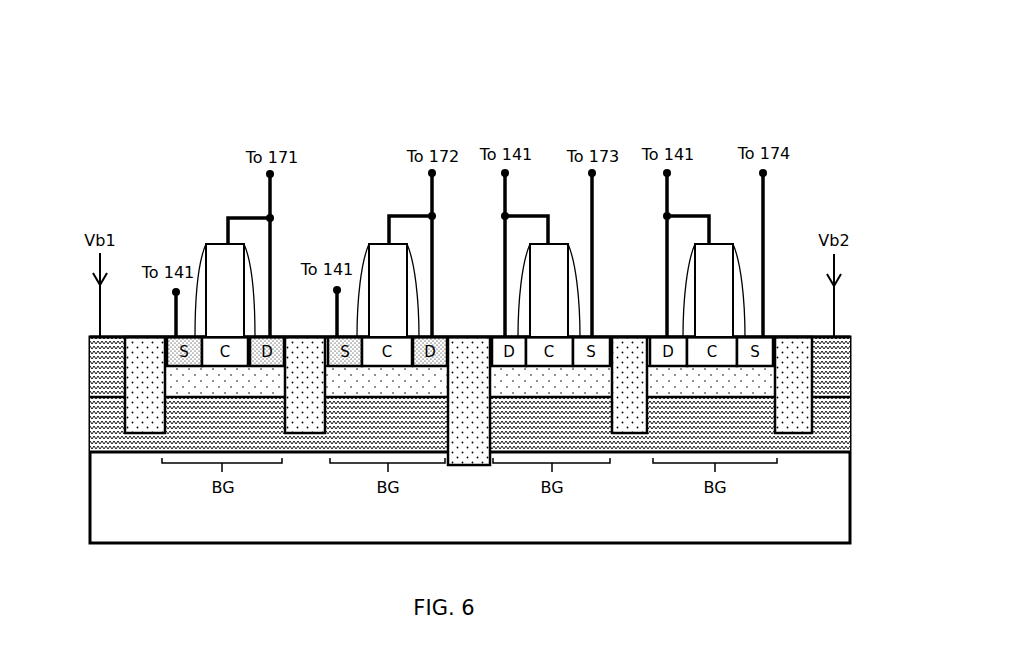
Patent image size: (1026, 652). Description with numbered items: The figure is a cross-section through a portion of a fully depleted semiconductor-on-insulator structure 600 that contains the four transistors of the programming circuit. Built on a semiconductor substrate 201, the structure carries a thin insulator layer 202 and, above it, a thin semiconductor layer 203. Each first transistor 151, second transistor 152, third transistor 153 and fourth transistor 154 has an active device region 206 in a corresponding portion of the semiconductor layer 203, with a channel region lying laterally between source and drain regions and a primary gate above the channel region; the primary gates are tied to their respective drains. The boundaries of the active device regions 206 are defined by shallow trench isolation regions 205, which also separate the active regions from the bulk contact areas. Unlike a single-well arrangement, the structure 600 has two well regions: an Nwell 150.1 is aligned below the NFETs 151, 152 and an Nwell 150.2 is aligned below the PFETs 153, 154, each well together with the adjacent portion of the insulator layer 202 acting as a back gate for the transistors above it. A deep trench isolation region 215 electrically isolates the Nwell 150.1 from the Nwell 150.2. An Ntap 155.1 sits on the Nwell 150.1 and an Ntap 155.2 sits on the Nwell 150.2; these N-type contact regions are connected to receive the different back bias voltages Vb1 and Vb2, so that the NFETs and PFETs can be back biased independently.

The fully depleted semiconductor-on-insulator structure 600 is at (112, 51).
The first transistor 151 is at (204, 219).
The second transistor 152 is at (367, 218).
The third transistor 153 is at (567, 225).
The fourth transistor 154 is at (727, 220).
The semiconductor layer 203 is at (152, 342).
The active device region 206 is at (300, 342).
The isolation regions 205 is at (140, 437).
The deep trench isolation region 215 is at (473, 467).
The insulator layer 202 is at (413, 398).
The semiconductor substrate 201 is at (808, 531).
The first Ntap 155.1 is at (90, 347).
The second Ntap 155.2 is at (857, 358).
The first Nwell 150.1 is at (90, 408).
The second Nwell 150.2 is at (857, 420).